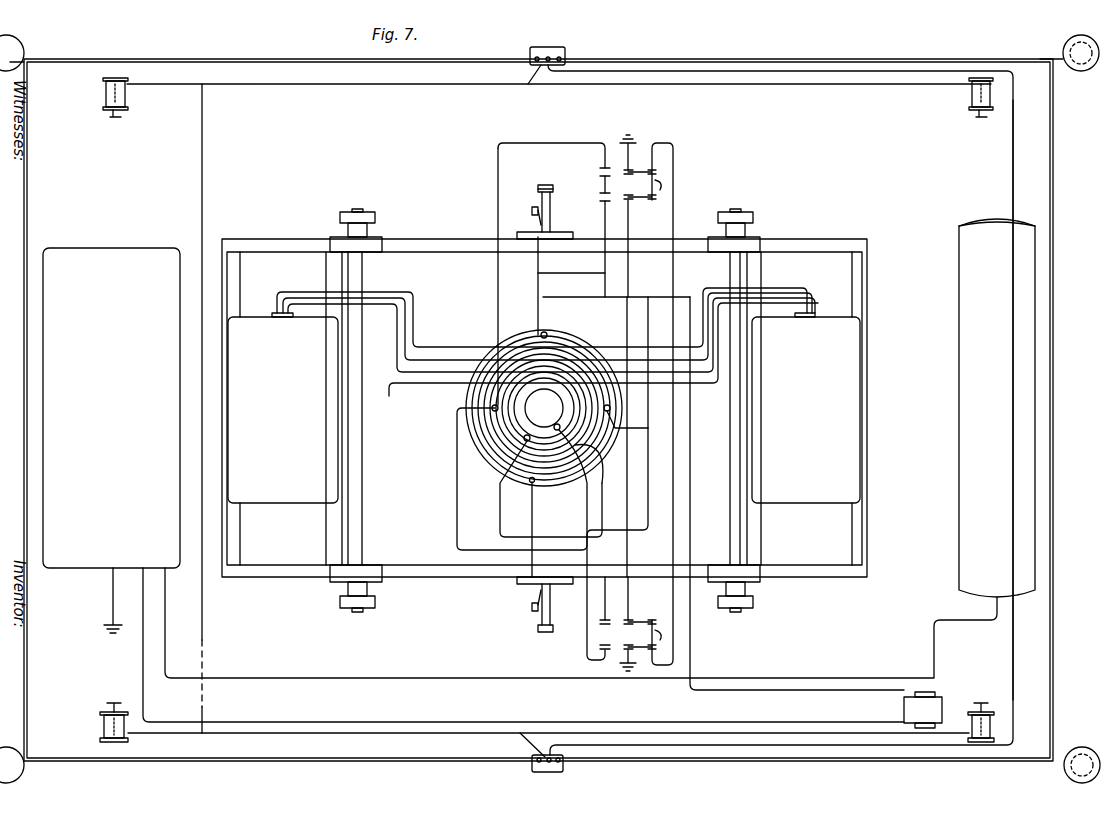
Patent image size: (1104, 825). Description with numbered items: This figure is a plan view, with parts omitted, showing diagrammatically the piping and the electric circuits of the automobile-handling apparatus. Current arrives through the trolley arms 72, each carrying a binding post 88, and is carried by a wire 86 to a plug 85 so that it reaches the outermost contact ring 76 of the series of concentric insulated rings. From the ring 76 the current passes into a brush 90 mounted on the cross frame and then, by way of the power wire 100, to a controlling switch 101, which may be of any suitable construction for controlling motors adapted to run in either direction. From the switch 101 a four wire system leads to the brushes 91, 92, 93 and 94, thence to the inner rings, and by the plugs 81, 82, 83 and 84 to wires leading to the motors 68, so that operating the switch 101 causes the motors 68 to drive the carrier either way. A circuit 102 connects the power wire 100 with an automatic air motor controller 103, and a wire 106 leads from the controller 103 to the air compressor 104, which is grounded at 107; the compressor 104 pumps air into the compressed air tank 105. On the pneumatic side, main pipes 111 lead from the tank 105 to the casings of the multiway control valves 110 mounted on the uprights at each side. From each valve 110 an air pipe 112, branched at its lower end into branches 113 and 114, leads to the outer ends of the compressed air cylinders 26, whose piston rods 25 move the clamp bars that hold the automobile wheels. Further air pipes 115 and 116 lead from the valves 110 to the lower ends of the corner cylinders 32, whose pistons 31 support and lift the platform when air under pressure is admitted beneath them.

The piston rod 25 is at (116, 118).
The compressed air cylinder 26 is at (128, 92).
The piston 31 is at (550, 412).
The cylinder 32 is at (20, 55).
The motor 68 is at (544, 408).
The trolley arm 72 is at (552, 207).
The outermost contact ring 76 is at (466, 420).
The plug 81 is at (556, 366).
The plug 82 is at (560, 392).
The plug 83 is at (556, 380).
The plug 84 is at (550, 352).
The plug 85 is at (536, 334).
The wire 86 is at (540, 265).
The binding post 88 is at (533, 212).
The brush 90 is at (546, 332).
The brush 91 is at (612, 414).
The brush 92 is at (558, 432).
The brush 93 is at (524, 442).
The brush 94 is at (492, 407).
The wire 100 is at (602, 296).
The controlling switch 101 is at (658, 178).
The circuit 102 is at (690, 470).
The automatic air motor controller 103 is at (940, 700).
The air compressor 104 is at (111, 408).
The compressed air tank 105 is at (997, 408).
The wire 106 is at (383, 680).
The ground 107 is at (110, 605).
The multiway control valve 110 is at (558, 48).
The main pipe 111 is at (1011, 182).
The air pipe 112 is at (530, 75).
The branch of air pipe 113 is at (803, 73).
The branch of air pipe 114 is at (368, 87).
The air pipe 115 is at (262, 50).
The air pipe 116 is at (840, 60).